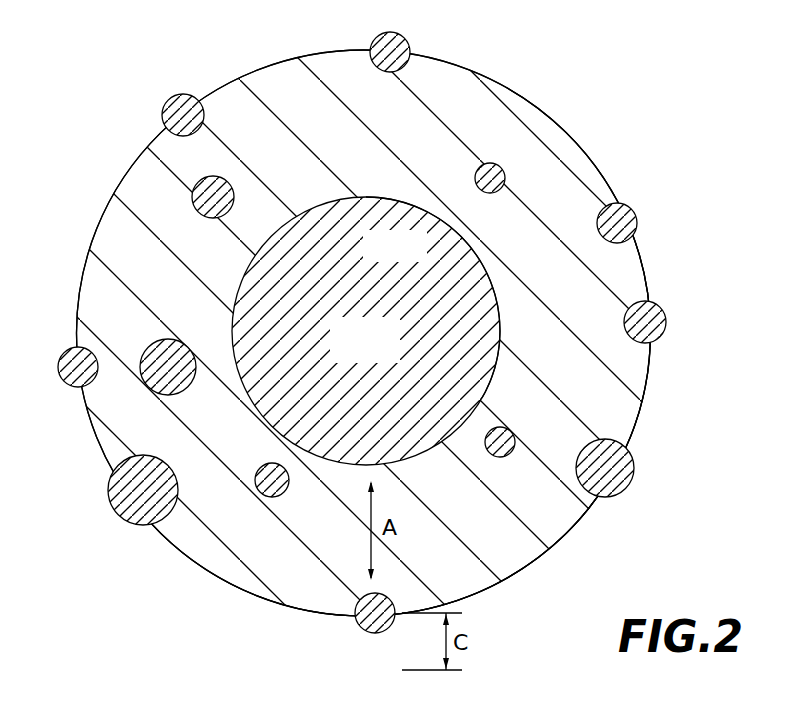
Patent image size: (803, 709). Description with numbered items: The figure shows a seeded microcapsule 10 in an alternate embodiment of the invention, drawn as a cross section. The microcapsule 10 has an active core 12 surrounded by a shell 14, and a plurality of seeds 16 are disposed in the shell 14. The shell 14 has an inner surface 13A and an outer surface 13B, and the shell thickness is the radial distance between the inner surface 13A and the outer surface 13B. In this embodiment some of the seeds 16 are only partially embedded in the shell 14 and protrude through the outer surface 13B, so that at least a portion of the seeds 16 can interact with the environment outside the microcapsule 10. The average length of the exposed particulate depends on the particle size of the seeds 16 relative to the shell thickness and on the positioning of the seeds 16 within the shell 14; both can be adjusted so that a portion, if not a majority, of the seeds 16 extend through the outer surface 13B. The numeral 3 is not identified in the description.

The seeded microcapsule 10 is at (596, 112).
The outer layer 3 is at (594, 183).
The active core 12 is at (385, 357).
The inner surface 13A is at (480, 262).
The outer surface 13B is at (651, 383).
The shell 14 is at (512, 577).
The seeds 16 is at (206, 192).